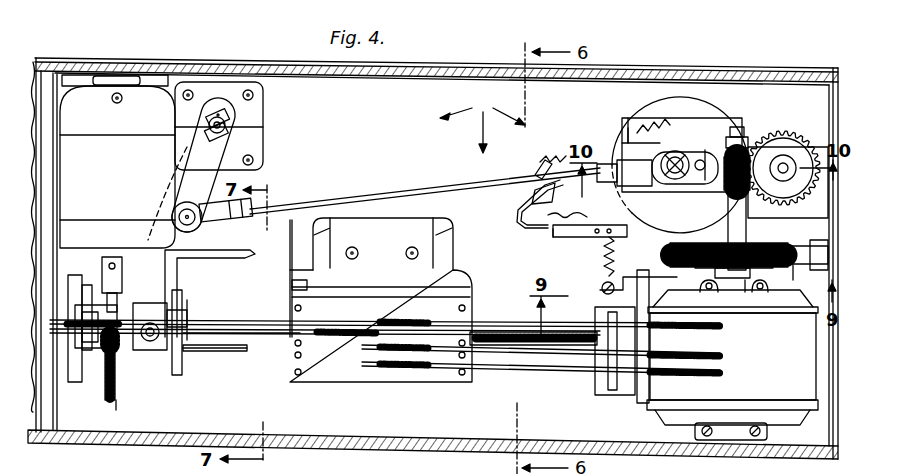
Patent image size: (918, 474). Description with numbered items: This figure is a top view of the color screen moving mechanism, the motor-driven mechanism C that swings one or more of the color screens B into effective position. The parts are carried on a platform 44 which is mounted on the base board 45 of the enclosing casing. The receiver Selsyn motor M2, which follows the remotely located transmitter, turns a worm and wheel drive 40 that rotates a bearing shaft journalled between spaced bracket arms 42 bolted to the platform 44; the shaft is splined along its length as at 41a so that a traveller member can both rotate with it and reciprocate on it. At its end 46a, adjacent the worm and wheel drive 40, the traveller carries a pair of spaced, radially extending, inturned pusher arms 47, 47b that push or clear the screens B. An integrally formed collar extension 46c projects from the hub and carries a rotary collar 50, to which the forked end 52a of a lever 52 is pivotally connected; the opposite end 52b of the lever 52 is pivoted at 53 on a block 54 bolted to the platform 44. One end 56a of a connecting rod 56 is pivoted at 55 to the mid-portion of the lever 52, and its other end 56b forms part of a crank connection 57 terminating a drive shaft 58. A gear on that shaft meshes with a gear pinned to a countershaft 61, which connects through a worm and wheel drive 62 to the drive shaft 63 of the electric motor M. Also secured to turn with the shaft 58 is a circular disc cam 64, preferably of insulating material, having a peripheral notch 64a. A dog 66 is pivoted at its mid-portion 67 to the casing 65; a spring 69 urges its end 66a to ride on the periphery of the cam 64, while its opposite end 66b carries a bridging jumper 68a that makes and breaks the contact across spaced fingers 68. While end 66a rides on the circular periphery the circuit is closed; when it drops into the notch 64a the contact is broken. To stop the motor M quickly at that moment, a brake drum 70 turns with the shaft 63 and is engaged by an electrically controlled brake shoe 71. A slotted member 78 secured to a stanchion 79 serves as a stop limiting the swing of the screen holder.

The platform 44 is at (433, 258).
The base board 45 is at (153, 62).
The worm and wheel drive 40 is at (127, 333).
The splined portion of bearing shaft 41a is at (548, 355).
The bracket arms 42 is at (97, 357).
The end of traveller member 46a is at (180, 363).
The collar extension 46c is at (117, 387).
The pusher arm 47 is at (237, 333).
The pusher arm 47b is at (232, 252).
The rotary collar 50 is at (157, 347).
The lever 52 is at (192, 180).
The forked end of lever 52a is at (170, 305).
The end of lever 52b is at (218, 100).
The pivot 53 is at (240, 127).
The block 54 is at (252, 136).
The pivot 55 is at (232, 227).
The connecting rod 56 is at (433, 190).
The end of connecting rod 56a is at (262, 210).
The end of connecting rod 56b is at (663, 113).
The crank connection 57 is at (697, 158).
The drive shaft 58 is at (710, 160).
The countershaft 61 is at (783, 172).
The worm and wheel drive 62 is at (755, 158).
The drive shaft of motor 63 is at (745, 127).
The disc cam 64 is at (680, 143).
The notch 64a is at (680, 180).
The casing 65 is at (638, 138).
The dog 66 is at (596, 226).
The end of dog 66a is at (658, 232).
The end of dog 66b is at (570, 238).
The mid-portion pivot of dog 67 is at (623, 202).
The spaced fingers 68 is at (547, 223).
The bridging jumper 68a is at (560, 232).
The spring 69 is at (600, 272).
The brake drum 70 is at (758, 250).
The brake shoe 71 is at (793, 265).
The slotted member 78 is at (300, 284).
The stanchion 79 is at (455, 238).
The electric motor M is at (727, 355).
The receiver Selsyn motor M2 is at (117, 161).
The color screens B is at (282, 360).
The motor-driven mechanism C is at (482, 120).